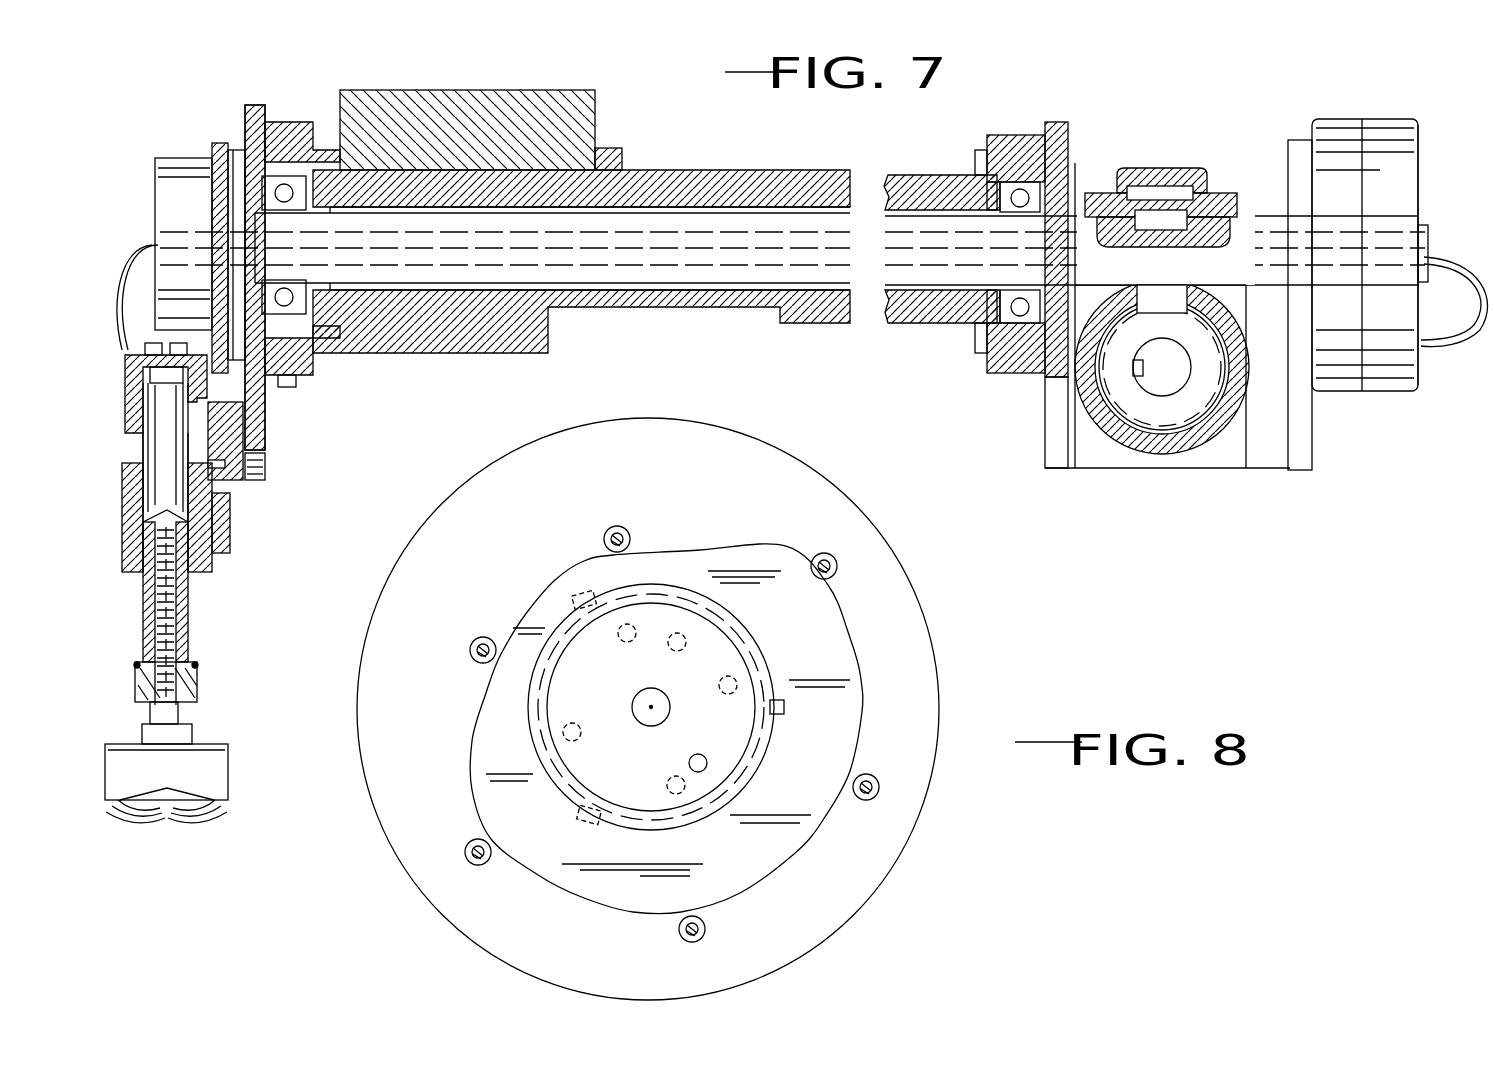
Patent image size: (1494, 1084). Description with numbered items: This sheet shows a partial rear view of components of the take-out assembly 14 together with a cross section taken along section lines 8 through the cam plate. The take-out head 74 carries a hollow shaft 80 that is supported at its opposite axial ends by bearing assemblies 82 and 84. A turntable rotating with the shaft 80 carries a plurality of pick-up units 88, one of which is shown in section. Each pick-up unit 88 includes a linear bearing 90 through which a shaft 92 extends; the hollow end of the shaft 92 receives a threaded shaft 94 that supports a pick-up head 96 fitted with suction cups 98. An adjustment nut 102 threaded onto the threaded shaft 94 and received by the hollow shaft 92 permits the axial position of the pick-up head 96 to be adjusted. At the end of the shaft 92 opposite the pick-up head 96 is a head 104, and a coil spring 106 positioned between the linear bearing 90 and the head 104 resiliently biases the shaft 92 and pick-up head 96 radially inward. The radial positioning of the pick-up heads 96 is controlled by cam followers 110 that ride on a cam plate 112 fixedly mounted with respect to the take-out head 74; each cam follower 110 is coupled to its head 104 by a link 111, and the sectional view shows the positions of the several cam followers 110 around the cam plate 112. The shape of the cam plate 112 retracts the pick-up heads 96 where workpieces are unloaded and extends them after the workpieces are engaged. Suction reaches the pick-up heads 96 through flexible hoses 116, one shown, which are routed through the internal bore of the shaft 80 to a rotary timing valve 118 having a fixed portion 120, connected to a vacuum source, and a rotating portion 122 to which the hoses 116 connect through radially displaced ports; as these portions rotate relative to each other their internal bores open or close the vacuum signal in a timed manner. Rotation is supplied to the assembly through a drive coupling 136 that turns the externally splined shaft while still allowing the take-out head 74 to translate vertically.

In FIG. 7, the section lines 8- 8 is at (236, 68).
In FIG. 7, the take-out assembly 14 is at (152, 213).
In FIG. 7, the take-out head 74 is at (458, 355).
In FIG. 7, the shaft 80 is at (705, 293).
In FIG. 7, the bearing assembly 82 is at (286, 183).
In FIG. 7, the bearing assembly 84 is at (987, 175).
In FIG. 7, the pick-up unit 88 is at (199, 787).
In FIG. 7, the linear bearing 90 is at (120, 528).
In FIG. 7, the shaft 92 is at (206, 611).
In FIG. 7, the threaded shaft 94 is at (190, 628).
In FIG. 7, the pick-up head 96 is at (230, 793).
In FIG. 7, the suction cups 98 is at (197, 822).
In FIG. 7, the adjustment nut 102 is at (198, 686).
In FIG. 7, the head 104 is at (124, 362).
In FIG. 7, the coil spring 106 is at (143, 448).
In FIG. 7, the cam followers 110 is at (267, 470).
In FIG. 8, the cam followers 110 is at (630, 528).
In FIG. 7, the links 111 is at (248, 442).
In FIG. 7, the cam plate 112 is at (268, 400).
In FIG. 8, the cam plate 112 is at (860, 678).
In FIG. 7, the flexible hoses 116 is at (1432, 258).
In FIG. 7, the rotary timing valve 118 is at (1353, 274).
In FIG. 7, the fixed portion 120 is at (1325, 119).
In FIG. 7, the rotating portion 122 is at (1420, 175).
In FIG. 7, the drive coupling 136 is at (1170, 455).